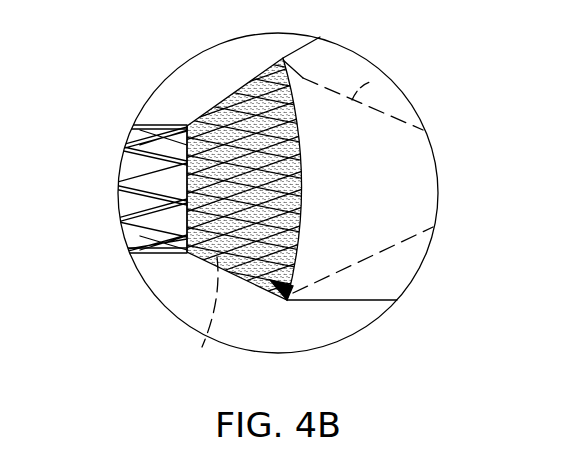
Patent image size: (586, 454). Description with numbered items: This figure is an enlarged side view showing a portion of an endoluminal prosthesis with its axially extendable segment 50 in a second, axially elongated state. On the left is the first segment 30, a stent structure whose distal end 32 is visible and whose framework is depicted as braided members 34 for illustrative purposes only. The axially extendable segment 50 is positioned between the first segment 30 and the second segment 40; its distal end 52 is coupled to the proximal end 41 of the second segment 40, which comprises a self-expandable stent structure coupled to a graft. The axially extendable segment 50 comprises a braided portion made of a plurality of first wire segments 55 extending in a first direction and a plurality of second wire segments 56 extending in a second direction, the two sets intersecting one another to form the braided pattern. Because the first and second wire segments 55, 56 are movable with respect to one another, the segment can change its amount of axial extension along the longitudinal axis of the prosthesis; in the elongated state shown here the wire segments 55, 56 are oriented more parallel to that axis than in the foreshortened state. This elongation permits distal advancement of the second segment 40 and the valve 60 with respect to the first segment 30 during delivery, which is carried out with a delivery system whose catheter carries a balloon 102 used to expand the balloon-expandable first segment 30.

The first segment 30 is at (163, 120).
The distal end 32 is at (178, 250).
The braided members 34 is at (138, 197).
The second segment 40 is at (368, 300).
The proximal end 41 is at (303, 300).
The axially extendable segment 50 is at (210, 102).
The distal end 52 is at (273, 300).
The first wire segments 55 is at (263, 90).
The second wire segments 56 is at (247, 97).
The valve 60 is at (385, 73).
The balloon 102 is at (203, 315).